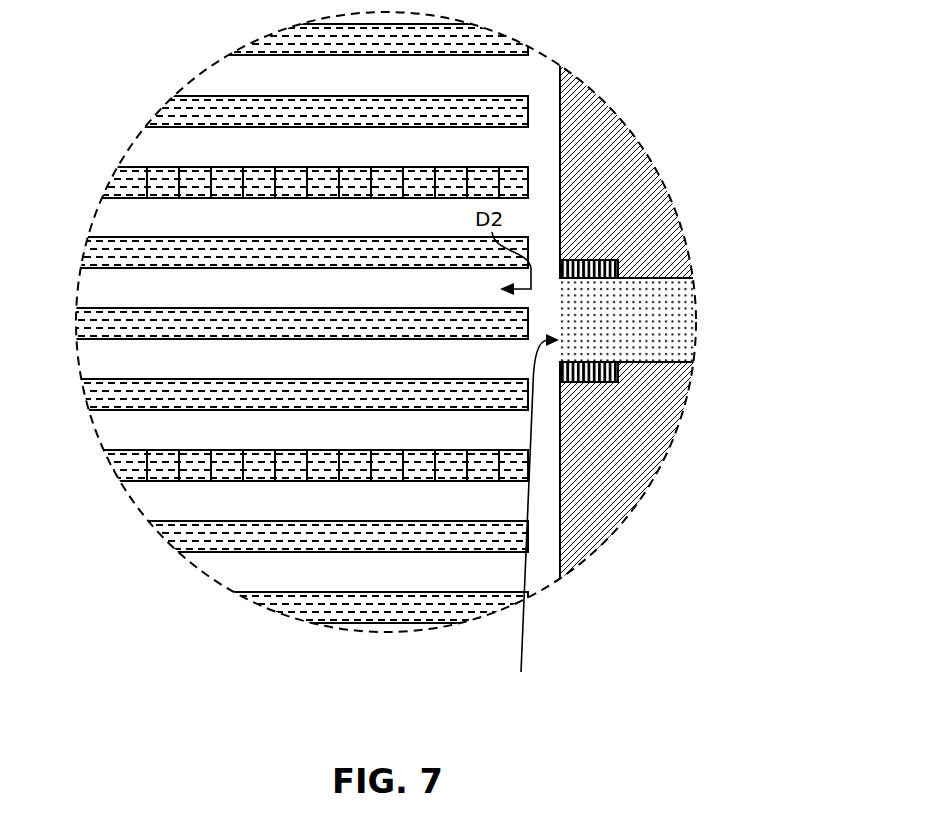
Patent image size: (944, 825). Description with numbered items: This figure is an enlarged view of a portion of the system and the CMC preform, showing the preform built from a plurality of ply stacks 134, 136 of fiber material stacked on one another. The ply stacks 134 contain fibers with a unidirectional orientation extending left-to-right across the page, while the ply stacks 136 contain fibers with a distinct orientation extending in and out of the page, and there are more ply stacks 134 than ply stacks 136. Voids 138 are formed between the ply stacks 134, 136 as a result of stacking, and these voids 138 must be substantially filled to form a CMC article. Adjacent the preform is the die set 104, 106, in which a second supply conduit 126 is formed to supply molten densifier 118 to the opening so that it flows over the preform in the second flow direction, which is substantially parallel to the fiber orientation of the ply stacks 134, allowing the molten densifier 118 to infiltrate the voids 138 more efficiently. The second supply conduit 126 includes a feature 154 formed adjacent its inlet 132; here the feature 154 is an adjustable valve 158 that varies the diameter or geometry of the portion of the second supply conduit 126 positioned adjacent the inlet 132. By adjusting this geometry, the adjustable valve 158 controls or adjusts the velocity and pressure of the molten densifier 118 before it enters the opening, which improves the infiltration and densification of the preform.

The die set 104 is at (661, 331).
The semiconductor layer 106 is at (650, 160).
The molten densifier 118 is at (696, 320).
The second supply conduit 126 is at (645, 363).
The inlet 132 is at (532, 514).
The ply stacks 134 is at (210, 96).
The ply stacks 136 is at (135, 167).
The voids 138 is at (303, 297).
The feature 154 is at (603, 457).
The adjustable valve 158 is at (588, 383).